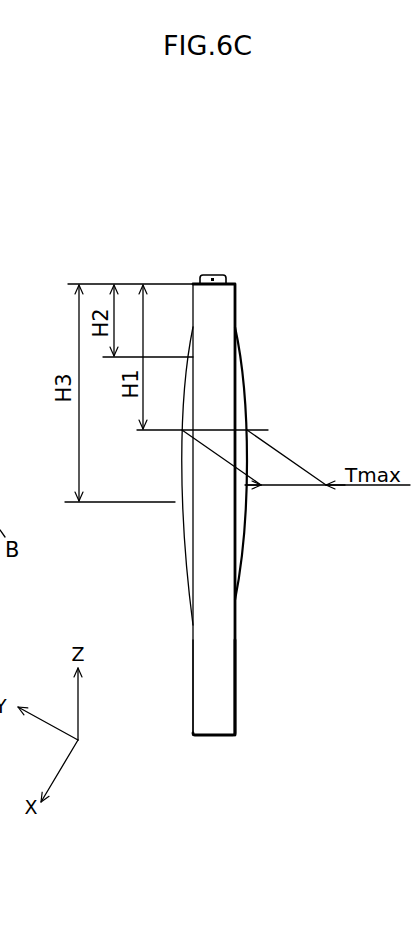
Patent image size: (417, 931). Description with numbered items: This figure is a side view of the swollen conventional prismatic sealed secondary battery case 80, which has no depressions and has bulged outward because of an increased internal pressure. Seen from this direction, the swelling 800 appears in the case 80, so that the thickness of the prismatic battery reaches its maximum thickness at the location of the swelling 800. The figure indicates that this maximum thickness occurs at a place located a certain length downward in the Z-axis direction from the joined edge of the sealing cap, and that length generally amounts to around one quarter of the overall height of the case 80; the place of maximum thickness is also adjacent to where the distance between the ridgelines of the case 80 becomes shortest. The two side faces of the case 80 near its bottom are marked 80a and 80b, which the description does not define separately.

The case 80 is at (223, 303).
The swelling 800 is at (250, 455).
The first surface 80a is at (190, 714).
The second surface 80b is at (238, 714).